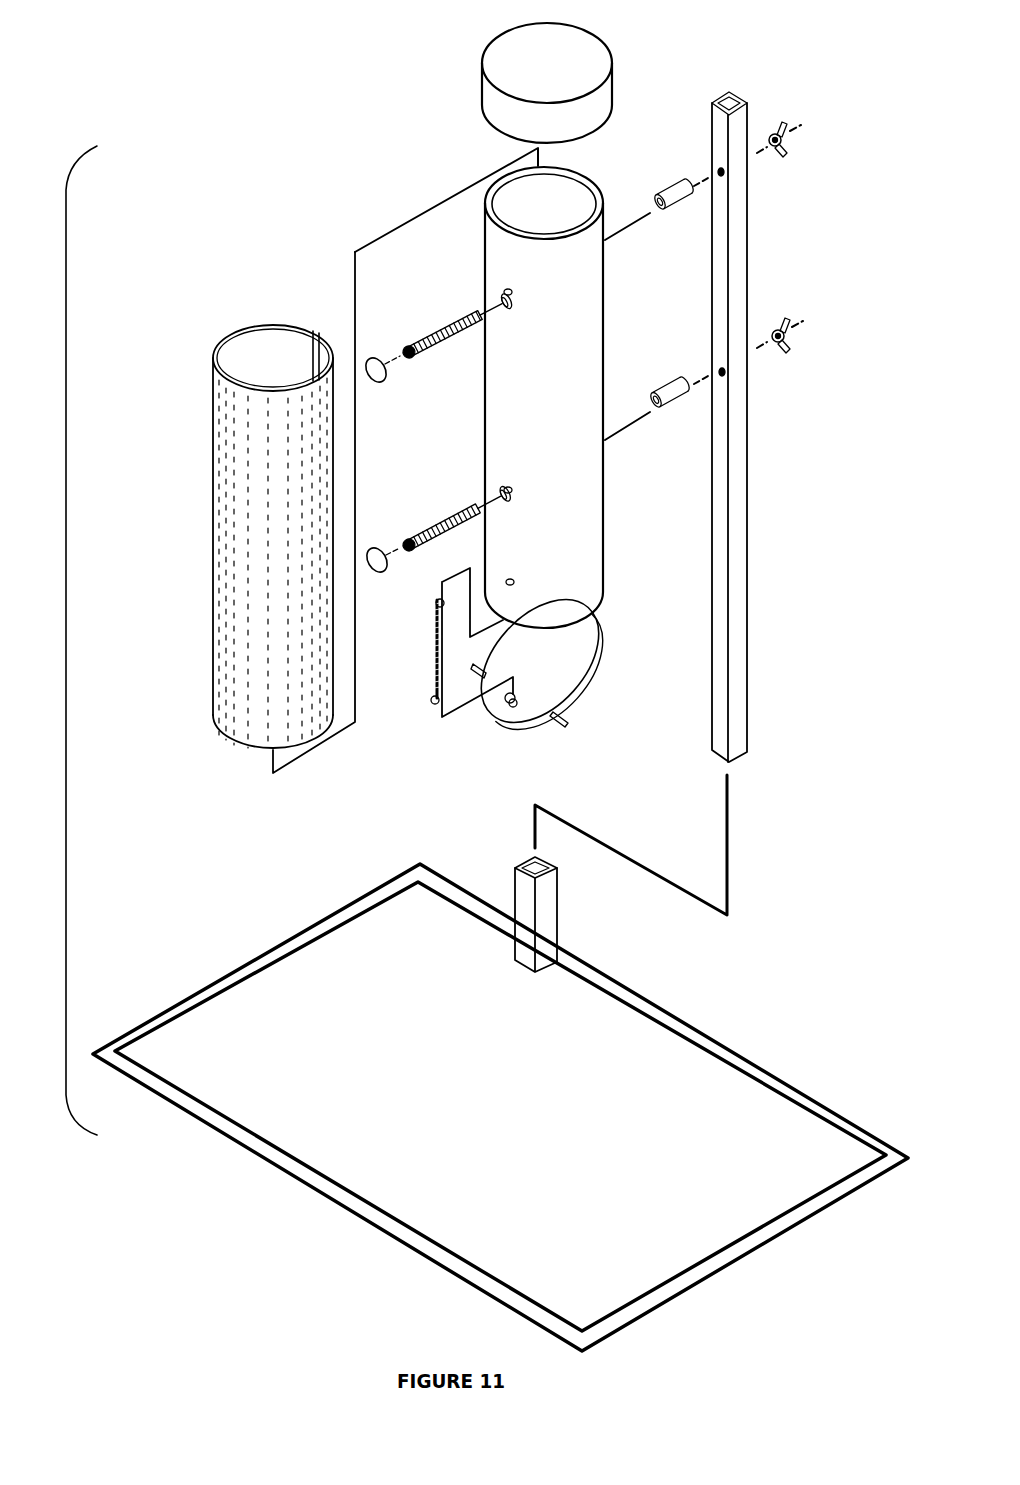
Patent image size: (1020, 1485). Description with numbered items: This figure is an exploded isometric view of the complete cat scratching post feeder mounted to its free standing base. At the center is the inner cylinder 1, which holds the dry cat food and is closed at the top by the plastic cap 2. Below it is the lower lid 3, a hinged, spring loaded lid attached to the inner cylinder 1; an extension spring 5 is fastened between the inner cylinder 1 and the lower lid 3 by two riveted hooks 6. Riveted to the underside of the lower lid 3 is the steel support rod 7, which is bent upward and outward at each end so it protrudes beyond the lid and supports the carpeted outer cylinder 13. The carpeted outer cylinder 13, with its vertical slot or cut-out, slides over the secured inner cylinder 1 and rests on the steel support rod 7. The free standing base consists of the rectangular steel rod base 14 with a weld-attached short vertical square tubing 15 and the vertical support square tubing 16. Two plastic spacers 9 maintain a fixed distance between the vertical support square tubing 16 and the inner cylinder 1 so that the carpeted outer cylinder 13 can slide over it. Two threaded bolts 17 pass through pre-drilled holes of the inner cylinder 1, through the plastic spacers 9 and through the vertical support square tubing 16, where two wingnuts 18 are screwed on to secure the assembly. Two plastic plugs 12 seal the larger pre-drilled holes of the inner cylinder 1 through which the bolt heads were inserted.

The inner cylinder 1 is at (585, 165).
The plastic cap 2 is at (600, 32).
The lower lid 3 is at (597, 618).
The extension spring 5 is at (432, 655).
The riveted hooks 6 is at (517, 708).
The steel support rod 7 is at (568, 712).
The plastic spacers 9 is at (672, 212).
The plastic plugs 12 is at (375, 358).
The carpeted outer cylinder 13 is at (252, 326).
The rectangular steel rod base 14 is at (297, 957).
The short vertical square tubing 15 is at (512, 954).
The vertical support square tubing 16 is at (757, 540).
The threaded bolts 17 is at (440, 350).
The wingnuts 18 is at (784, 128).